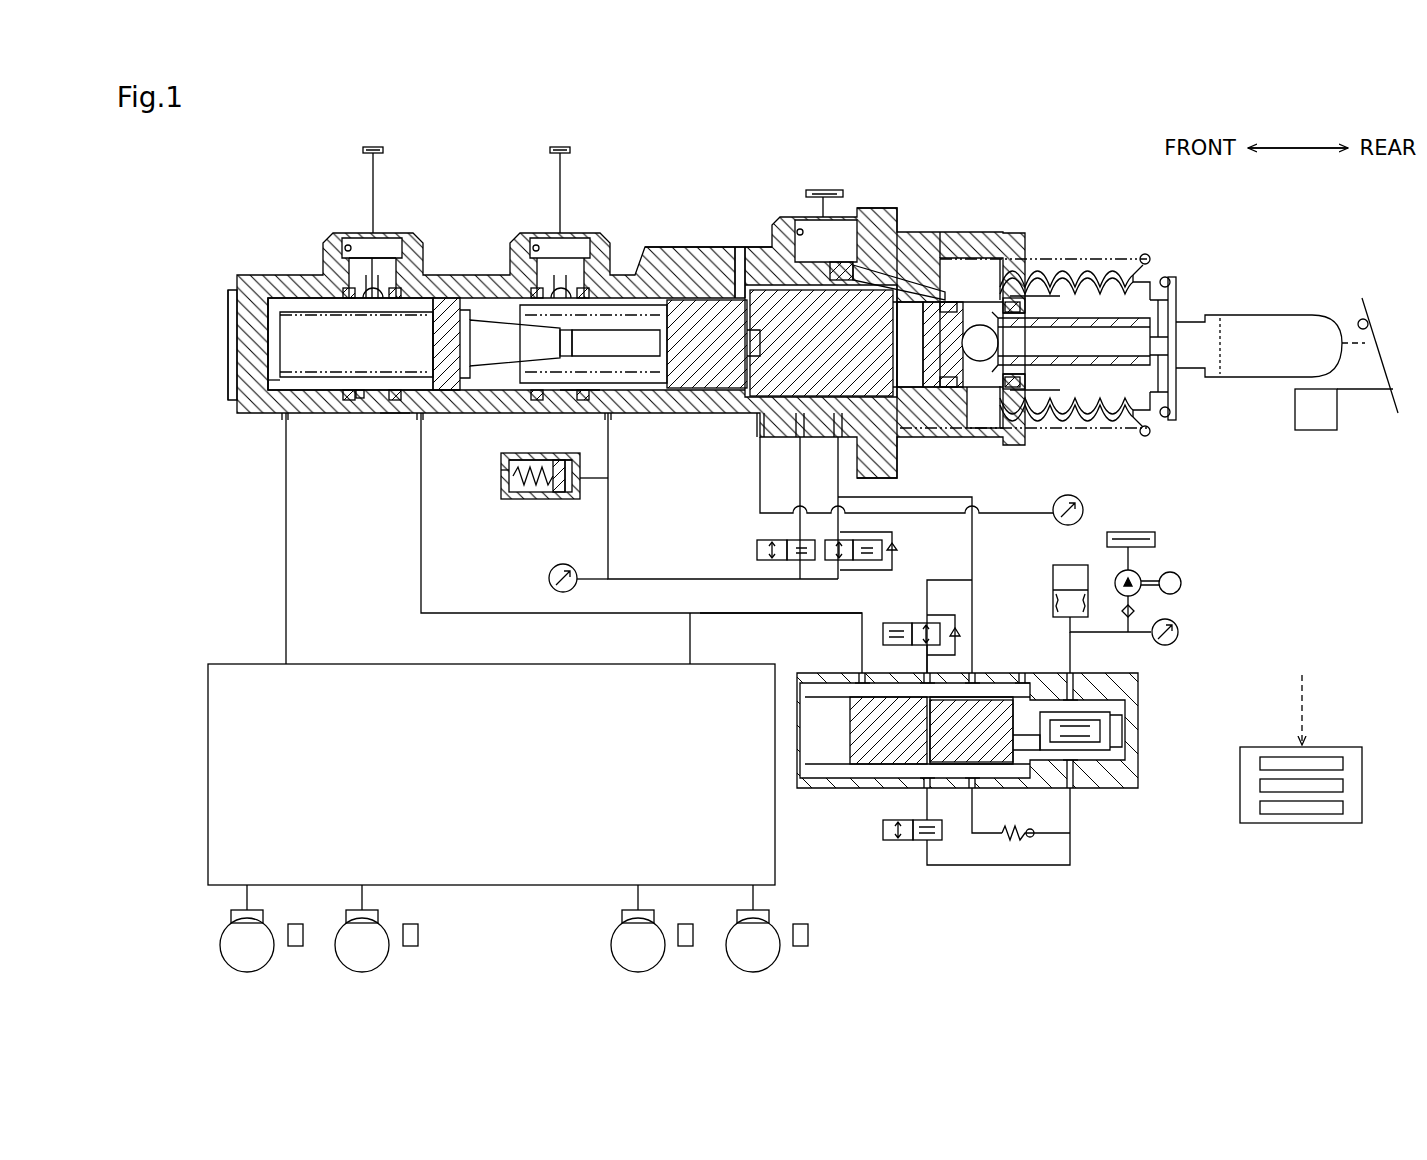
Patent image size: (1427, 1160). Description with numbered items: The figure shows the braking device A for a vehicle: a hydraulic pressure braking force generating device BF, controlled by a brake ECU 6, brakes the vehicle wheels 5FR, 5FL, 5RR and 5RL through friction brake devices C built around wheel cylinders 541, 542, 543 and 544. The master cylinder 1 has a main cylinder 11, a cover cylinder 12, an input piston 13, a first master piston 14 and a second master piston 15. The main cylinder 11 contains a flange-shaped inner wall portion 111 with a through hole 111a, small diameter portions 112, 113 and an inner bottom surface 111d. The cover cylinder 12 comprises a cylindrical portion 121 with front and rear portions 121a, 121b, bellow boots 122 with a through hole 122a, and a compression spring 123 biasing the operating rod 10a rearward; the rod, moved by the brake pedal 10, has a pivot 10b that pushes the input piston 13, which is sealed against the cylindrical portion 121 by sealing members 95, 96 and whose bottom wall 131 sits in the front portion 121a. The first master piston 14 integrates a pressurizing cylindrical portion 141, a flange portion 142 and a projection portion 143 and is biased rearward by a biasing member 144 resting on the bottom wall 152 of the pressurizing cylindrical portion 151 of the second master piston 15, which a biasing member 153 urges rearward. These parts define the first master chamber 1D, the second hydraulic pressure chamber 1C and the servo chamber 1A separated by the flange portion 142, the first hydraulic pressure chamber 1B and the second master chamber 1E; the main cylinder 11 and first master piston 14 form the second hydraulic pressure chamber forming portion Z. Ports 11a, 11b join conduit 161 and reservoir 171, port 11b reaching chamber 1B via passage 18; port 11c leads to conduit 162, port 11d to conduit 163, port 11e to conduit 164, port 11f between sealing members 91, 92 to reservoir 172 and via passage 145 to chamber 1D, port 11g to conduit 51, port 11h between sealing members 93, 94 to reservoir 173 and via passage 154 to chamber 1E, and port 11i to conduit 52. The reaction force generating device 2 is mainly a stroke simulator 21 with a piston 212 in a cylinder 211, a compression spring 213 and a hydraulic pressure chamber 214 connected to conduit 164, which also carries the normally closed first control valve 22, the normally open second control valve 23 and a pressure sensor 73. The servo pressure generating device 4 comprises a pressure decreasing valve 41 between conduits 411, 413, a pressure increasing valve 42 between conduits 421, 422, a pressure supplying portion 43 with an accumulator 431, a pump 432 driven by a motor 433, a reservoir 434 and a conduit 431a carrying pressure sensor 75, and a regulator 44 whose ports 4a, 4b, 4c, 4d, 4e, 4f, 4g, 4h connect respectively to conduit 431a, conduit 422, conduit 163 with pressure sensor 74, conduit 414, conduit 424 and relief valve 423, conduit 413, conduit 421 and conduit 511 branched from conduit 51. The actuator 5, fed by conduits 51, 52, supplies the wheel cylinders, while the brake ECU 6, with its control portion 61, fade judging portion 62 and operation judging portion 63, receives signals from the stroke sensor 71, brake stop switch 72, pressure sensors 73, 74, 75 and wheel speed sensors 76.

The master cylinder 1 is at (222, 297).
The main cylinder 11 is at (268, 280).
The cover cylinder 12 is at (1067, 385).
The input piston 13 is at (1035, 300).
The first master piston 14 is at (655, 392).
The second master piston 15 is at (446, 298).
The passage 18 is at (958, 300).
The stroke simulator 21 is at (530, 455).
The first control valve 22 is at (771, 540).
The second control valve 23 is at (836, 540).
The reaction force generating device 2 is at (534, 500).
The servo pressure generating device 4 is at (1005, 730).
The actuator 5 is at (255, 662).
The brake ECU 6 is at (1328, 730).
The brake pedal 10 is at (1370, 310).
The operating rod 10a is at (988, 340).
The pivot 10b is at (1115, 330).
The port 11a is at (827, 420).
The port 11b is at (848, 245).
The port 11c is at (793, 420).
The port 11d is at (753, 420).
The port 11e is at (656, 415).
The port 11f is at (556, 283).
The port 11g is at (432, 425).
The port 11h is at (380, 283).
The port 11i is at (278, 420).
The servo chamber 1A is at (725, 420).
The first hydraulic pressure chamber 1B is at (908, 380).
The second hydraulic pressure chamber 1C is at (690, 372).
The first master chamber 1D is at (485, 474).
The second master chamber 1E is at (310, 418).
The pressure decreasing valve 41 is at (883, 625).
The pressure increasing valve 42 is at (883, 840).
The pressure supplying portion 43 is at (1151, 599).
The regulator 44 is at (1138, 776).
The port 4a is at (1070, 680).
The port 4b is at (1073, 788).
The port 4c is at (1022, 673).
The port 4d is at (973, 673).
The port 4e is at (973, 788).
The port 4f is at (930, 673).
The port 4g is at (930, 788).
The port 4h is at (862, 673).
The conduit 51 is at (421, 557).
The conduit 52 is at (286, 568).
The control portion 61 is at (1345, 764).
The fade judging portion 62 is at (1345, 786).
The operation judging portion 63 is at (1345, 808).
The stroke sensor 71 is at (1318, 430).
The brake stop switch 72 is at (1359, 319).
The pressure sensor 73 is at (566, 566).
The pressure sensor 74 is at (1057, 519).
The pressure sensor 75 is at (1172, 642).
The wheel speed sensor 76 is at (303, 942).
The sealing member 91 is at (582, 290).
The sealing member 92 is at (537, 290).
The sealing member 93 is at (397, 290).
The sealing member 94 is at (348, 290).
The sealing member 95 is at (955, 300).
The sealing member 96 is at (1015, 300).
The inner wall portion 111 is at (766, 290).
The through hole 111a is at (738, 295).
The inner bottom surface 111d is at (258, 385).
The small diameter portion 112 is at (578, 395).
The small diameter portion 113 is at (400, 412).
The cylindrical portion 121 is at (1078, 498).
The front portion 121a is at (985, 420).
The rear portion 121b is at (1000, 420).
The boots 122 is at (1147, 420).
The through hole 122a is at (1170, 315).
The compression spring 123 is at (1172, 361).
The bottom wall 131 is at (1012, 298).
The pressurizing cylindrical portion 141 is at (657, 308).
The flange portion 142 is at (675, 265).
The projection portion 143 is at (920, 290).
The biasing member 144 is at (476, 322).
The passage 145 is at (487, 312).
The pressurizing cylindrical portion 151 is at (365, 398).
The bottom wall 152 is at (487, 415).
The biasing member 153 is at (300, 315).
The passage 154 is at (375, 280).
The conduit 161 is at (840, 488).
The conduit 162 is at (798, 482).
The conduit 163 is at (760, 487).
The conduit 164 is at (609, 458).
The reservoir 171 is at (824, 190).
The reservoir 172 is at (562, 176).
The reservoir 173 is at (375, 176).
The cylinder 211 is at (555, 453).
The piston 212 is at (560, 493).
The compression spring 213 is at (523, 485).
The hydraulic pressure chamber 214 is at (570, 493).
The conduit 411 is at (950, 580).
The conduit 413 is at (925, 662).
The conduit 414 is at (972, 607).
The conduit 421 is at (927, 802).
The conduit 422 is at (957, 867).
The relief valve 423 is at (1008, 836).
The conduit 424 is at (970, 828).
The accumulator 431 is at (1053, 575).
The conduit 431a is at (1072, 640).
The pump 432 is at (1118, 575).
The motor 433 is at (1174, 572).
The reservoir 434 is at (1155, 538).
The conduit 511 is at (770, 613).
The wheel cylinder 541 is at (255, 912).
The wheel cylinder 542 is at (370, 912).
The wheel cylinder 543 is at (647, 912).
The wheel cylinder 544 is at (760, 912).
The vehicle wheel 5FR is at (252, 972).
The vehicle wheel 5FL is at (367, 972).
The vehicle wheel 5RR is at (645, 972).
The vehicle wheel 5RL is at (758, 972).
The braking device A is at (1282, 222).
The hydraulic pressure braking force generating device BF is at (232, 188).
The friction brake device C is at (228, 914).
The second hydraulic pressure chamber forming portion Z is at (663, 268).